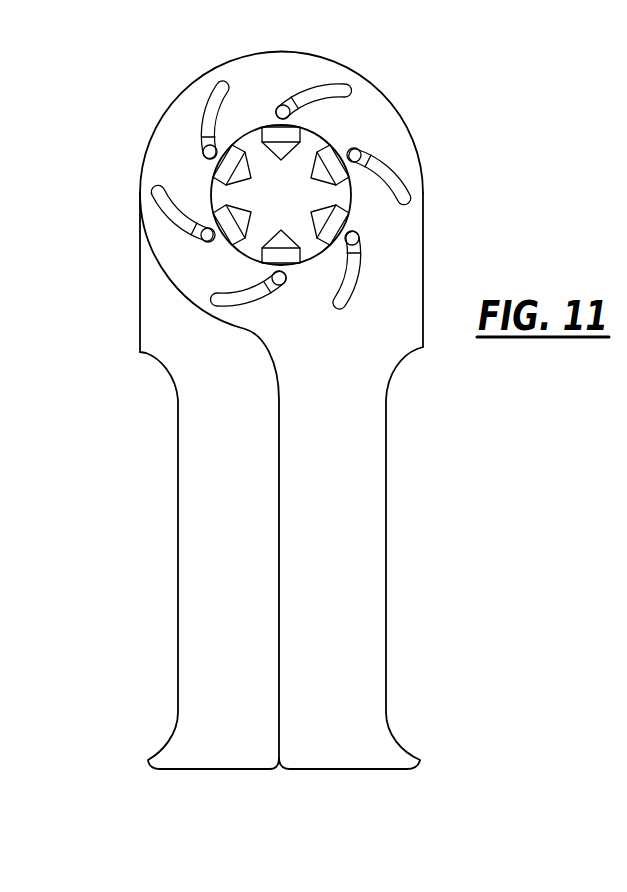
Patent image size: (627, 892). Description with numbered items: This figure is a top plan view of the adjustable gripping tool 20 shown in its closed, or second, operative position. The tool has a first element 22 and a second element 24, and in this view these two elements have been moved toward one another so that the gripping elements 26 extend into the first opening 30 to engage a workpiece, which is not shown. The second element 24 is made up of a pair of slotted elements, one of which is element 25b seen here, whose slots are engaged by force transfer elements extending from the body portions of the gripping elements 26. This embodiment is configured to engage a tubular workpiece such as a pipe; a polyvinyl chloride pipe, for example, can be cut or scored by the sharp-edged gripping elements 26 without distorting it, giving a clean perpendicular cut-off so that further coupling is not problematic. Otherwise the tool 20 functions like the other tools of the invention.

The adjustable gripping tool 20 is at (448, 221).
The first element 22 is at (171, 616).
The second element 24 is at (422, 503).
The pair of elements 25b is at (330, 748).
The gripping elements 26 is at (329, 158).
The first opening 30 is at (263, 163).